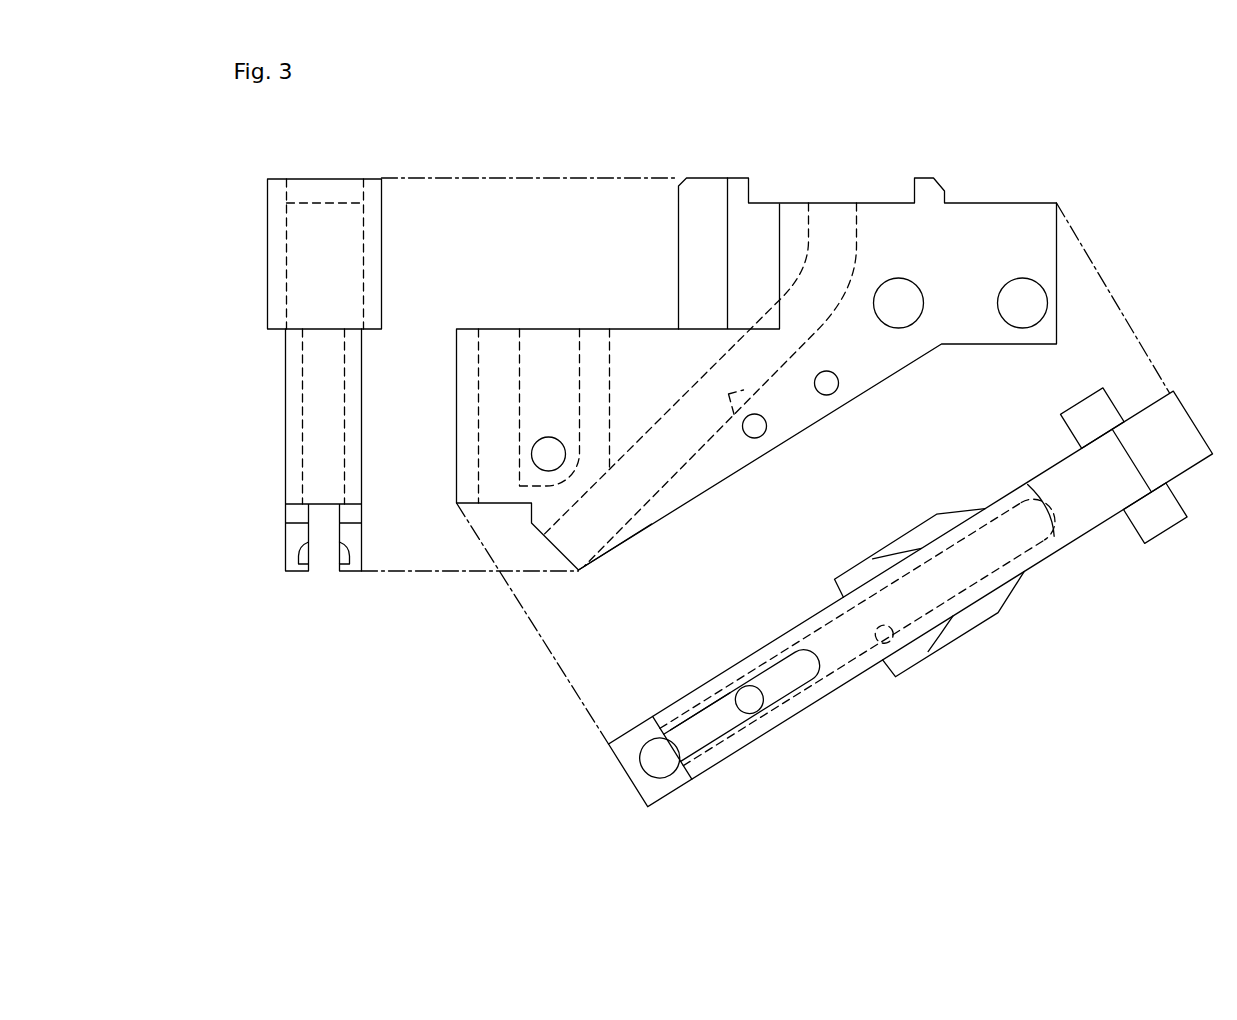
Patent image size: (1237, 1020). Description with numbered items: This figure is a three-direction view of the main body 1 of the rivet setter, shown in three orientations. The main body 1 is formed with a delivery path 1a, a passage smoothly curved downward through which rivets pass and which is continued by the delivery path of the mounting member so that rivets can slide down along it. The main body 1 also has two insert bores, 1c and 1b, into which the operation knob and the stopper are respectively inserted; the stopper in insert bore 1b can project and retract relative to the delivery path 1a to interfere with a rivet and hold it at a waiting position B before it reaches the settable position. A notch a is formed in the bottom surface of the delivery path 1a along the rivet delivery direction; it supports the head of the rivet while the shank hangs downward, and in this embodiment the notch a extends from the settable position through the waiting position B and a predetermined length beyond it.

The main body 1 is at (262, 190).
The delivery path 1a is at (737, 392).
The insert bore 1b is at (608, 365).
The insert bore 1c is at (313, 392).
The notch a is at (337, 557).
The waiting position B is at (616, 543).